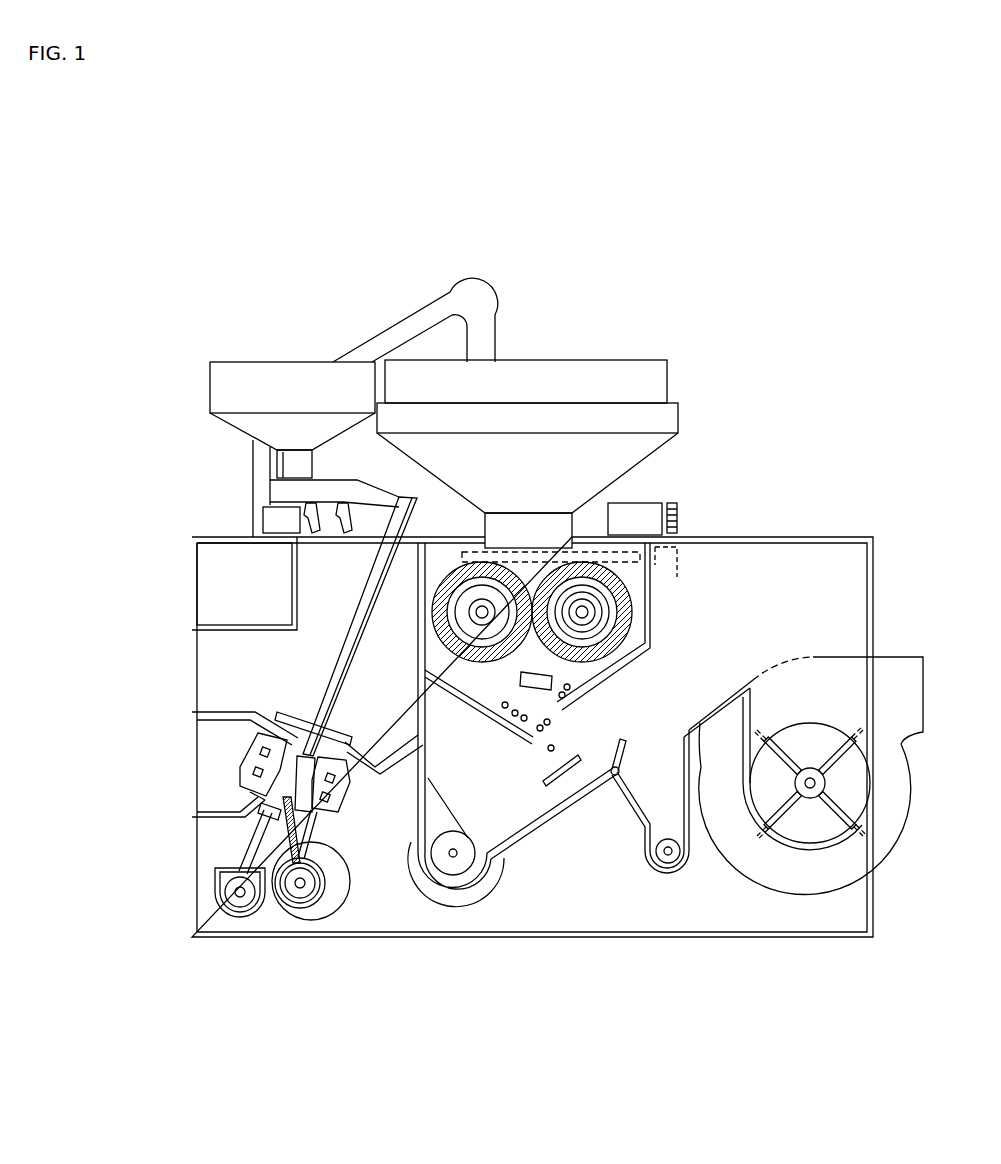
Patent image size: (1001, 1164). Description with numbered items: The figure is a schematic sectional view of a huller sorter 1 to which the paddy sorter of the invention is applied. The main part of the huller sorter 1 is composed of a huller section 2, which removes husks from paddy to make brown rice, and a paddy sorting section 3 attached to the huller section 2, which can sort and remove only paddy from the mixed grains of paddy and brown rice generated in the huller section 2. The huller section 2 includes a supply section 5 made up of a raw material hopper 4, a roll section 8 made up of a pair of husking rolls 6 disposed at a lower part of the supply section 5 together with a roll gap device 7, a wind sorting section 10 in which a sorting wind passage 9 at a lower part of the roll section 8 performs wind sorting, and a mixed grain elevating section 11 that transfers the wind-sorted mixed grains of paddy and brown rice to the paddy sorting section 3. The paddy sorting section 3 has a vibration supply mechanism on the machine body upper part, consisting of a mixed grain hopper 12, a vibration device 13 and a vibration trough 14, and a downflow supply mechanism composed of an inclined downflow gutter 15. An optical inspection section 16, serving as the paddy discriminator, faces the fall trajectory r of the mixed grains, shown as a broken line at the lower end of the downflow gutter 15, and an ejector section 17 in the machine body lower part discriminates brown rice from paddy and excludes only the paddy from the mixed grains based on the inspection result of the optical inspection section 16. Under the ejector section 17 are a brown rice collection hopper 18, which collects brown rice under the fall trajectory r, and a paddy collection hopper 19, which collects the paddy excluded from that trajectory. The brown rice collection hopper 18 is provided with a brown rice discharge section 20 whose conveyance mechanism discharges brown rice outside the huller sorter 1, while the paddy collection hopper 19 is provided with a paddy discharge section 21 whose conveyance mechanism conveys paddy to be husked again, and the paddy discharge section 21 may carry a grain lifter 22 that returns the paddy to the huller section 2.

The huller sorter 1 is at (817, 193).
The huller section 2 is at (827, 527).
The paddy sorting section 3 is at (185, 537).
The raw material hopper 4 is at (545, 358).
The supply section 5 is at (576, 523).
The husking rolls 6 is at (483, 645).
The roll gap device 7 is at (645, 518).
The roll section 8 is at (627, 594).
The sorting wind passage 9 is at (794, 776).
The wind sorting section 10 is at (587, 772).
The mixed grain elevating section 11 is at (475, 888).
The mixed grain hopper 12 is at (251, 362).
The vibration device 13 is at (260, 510).
The vibration trough 14 is at (282, 490).
The downflow gutter 15 is at (327, 683).
The optical inspection section 16 is at (245, 755).
The ejector section 17 is at (252, 793).
The brown rice collection hopper 18 is at (257, 828).
The paddy collection hopper 19 is at (288, 908).
The brown rice discharge section 20 is at (223, 910).
The paddy discharge section 21 is at (312, 904).
The grain lifter 22 is at (338, 898).
The fall trajectory r is at (331, 847).